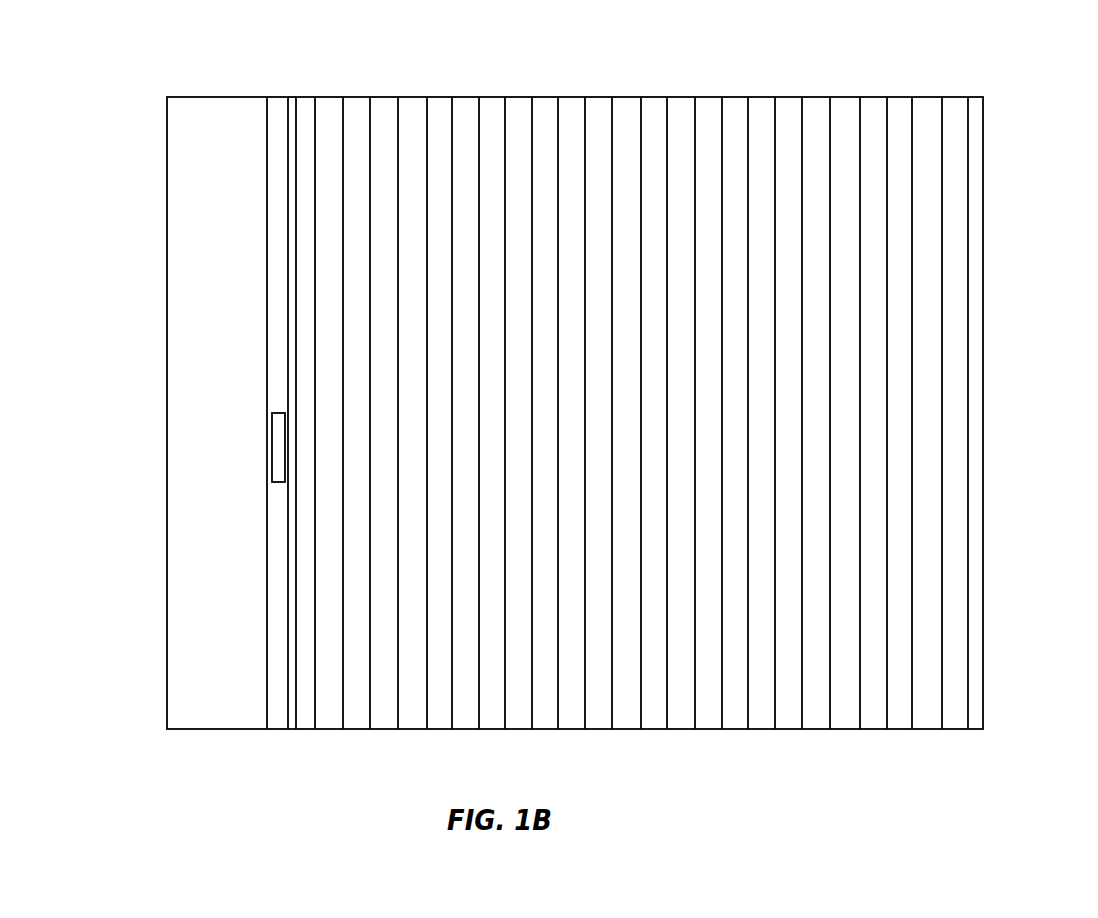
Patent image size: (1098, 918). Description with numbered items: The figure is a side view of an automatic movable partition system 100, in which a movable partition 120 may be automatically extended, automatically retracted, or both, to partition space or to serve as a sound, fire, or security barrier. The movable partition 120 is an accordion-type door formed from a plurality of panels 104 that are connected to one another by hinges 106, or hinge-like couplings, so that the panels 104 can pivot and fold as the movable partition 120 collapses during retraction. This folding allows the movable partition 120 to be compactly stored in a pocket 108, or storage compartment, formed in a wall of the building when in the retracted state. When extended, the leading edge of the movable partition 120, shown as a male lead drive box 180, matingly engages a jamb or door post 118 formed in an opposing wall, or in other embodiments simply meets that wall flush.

The movable partition system 100 is at (828, 66).
The panels 104 is at (474, 118).
The hinges 106 is at (450, 123).
The pocket 108 is at (985, 127).
The door post 118 is at (164, 126).
The movable partition 120 is at (360, 81).
The lead drive box 180 is at (270, 703).